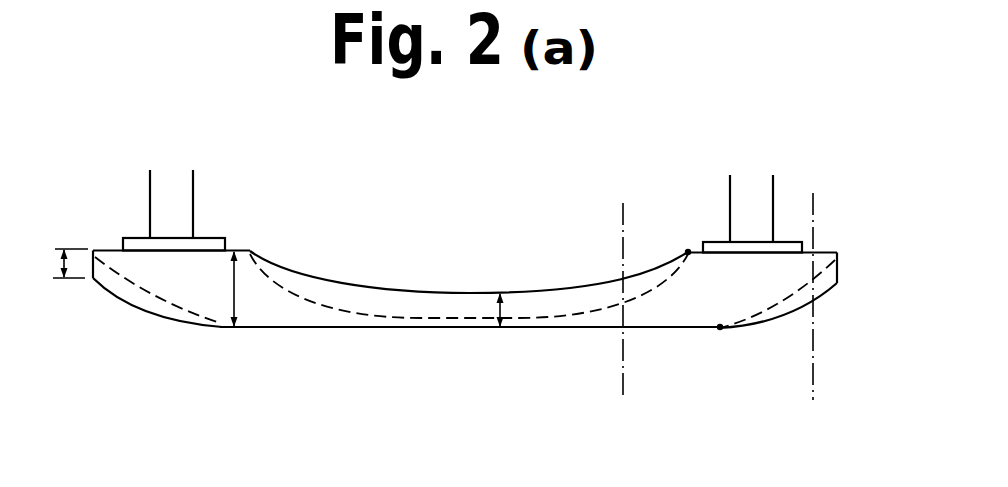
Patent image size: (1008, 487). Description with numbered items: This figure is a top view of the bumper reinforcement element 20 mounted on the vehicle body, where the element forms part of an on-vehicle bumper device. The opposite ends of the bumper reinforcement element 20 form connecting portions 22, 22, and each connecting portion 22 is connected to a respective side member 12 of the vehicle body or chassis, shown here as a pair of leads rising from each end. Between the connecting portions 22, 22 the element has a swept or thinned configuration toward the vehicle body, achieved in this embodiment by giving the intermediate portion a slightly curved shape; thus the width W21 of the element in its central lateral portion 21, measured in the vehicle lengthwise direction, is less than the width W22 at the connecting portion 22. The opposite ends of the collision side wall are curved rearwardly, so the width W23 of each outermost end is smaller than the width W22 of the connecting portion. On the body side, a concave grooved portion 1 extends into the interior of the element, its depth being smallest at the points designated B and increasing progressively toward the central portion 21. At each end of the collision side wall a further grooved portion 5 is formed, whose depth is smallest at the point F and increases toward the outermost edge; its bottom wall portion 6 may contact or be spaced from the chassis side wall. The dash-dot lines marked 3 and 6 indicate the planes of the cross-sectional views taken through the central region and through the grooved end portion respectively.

The grooved portion 1 is at (312, 300).
The side member 12 is at (195, 197).
The bumper reinforcement element 20 is at (535, 284).
The central lateral portion 21 is at (448, 328).
The connecting portion 22 is at (112, 248).
The section line 3- 3 is at (639, 297).
The grooved portion 5 is at (783, 303).
The bottom wall portion 6 is at (828, 299).
The point B is at (688, 250).
The point F is at (720, 330).
The width W21 is at (498, 314).
The width W22 is at (235, 288).
The width W23 is at (61, 266).